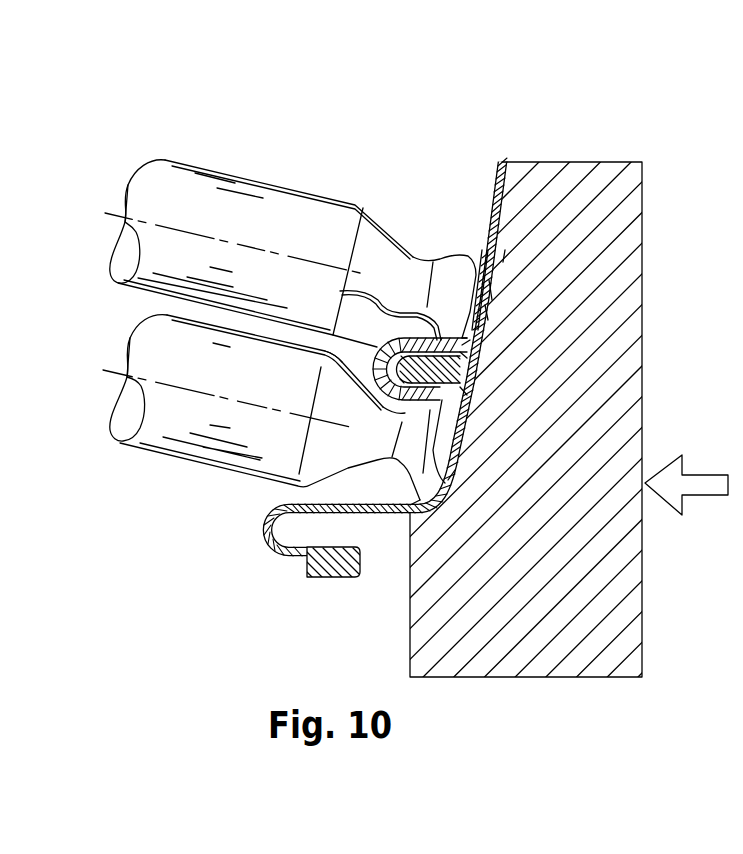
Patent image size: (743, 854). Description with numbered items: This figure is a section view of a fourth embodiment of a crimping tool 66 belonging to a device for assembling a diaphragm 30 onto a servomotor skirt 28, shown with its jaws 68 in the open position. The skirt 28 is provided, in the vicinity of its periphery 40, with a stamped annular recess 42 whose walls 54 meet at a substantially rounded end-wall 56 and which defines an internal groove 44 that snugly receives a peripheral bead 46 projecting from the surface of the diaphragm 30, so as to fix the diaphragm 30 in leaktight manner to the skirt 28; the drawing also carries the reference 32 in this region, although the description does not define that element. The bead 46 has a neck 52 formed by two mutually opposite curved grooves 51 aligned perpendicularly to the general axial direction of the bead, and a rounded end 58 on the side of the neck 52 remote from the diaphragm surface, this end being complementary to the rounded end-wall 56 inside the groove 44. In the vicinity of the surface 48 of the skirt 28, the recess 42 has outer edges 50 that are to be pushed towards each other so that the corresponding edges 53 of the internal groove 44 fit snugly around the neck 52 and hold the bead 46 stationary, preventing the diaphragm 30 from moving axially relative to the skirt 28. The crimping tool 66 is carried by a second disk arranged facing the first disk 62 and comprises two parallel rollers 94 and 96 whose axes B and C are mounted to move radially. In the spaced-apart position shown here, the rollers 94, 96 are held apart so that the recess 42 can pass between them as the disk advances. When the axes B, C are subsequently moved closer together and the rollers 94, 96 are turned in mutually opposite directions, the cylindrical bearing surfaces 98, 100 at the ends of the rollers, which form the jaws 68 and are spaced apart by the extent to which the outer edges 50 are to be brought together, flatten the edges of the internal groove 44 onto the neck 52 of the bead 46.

The crimping tool 66 is at (356, 325).
The roller 94 is at (202, 208).
The roller 96 is at (210, 443).
The axis B is at (147, 222).
The axis C is at (177, 388).
The skirt 28 is at (490, 178).
The surface 48 is at (500, 198).
The cylindrical bearing surface 98 is at (473, 258).
The outer edge 50 is at (423, 303).
The wall 54 is at (388, 330).
The stamped annular recess 42 is at (393, 327).
The peripheral bead 46 is at (375, 345).
The diaphragm 30 is at (498, 282).
The opening edge 32 is at (515, 312).
The edge 53 is at (495, 335).
The curved groove 51 is at (477, 370).
The neck 52 is at (482, 372).
The rounded end-wall 56 is at (340, 375).
The rounded end 58 is at (380, 397).
The internal groove 44 is at (418, 410).
The jaw 68 is at (508, 262).
The cylindrical bearing surface 100 is at (410, 505).
The periphery 40 is at (378, 502).
The first disk 62 is at (565, 653).